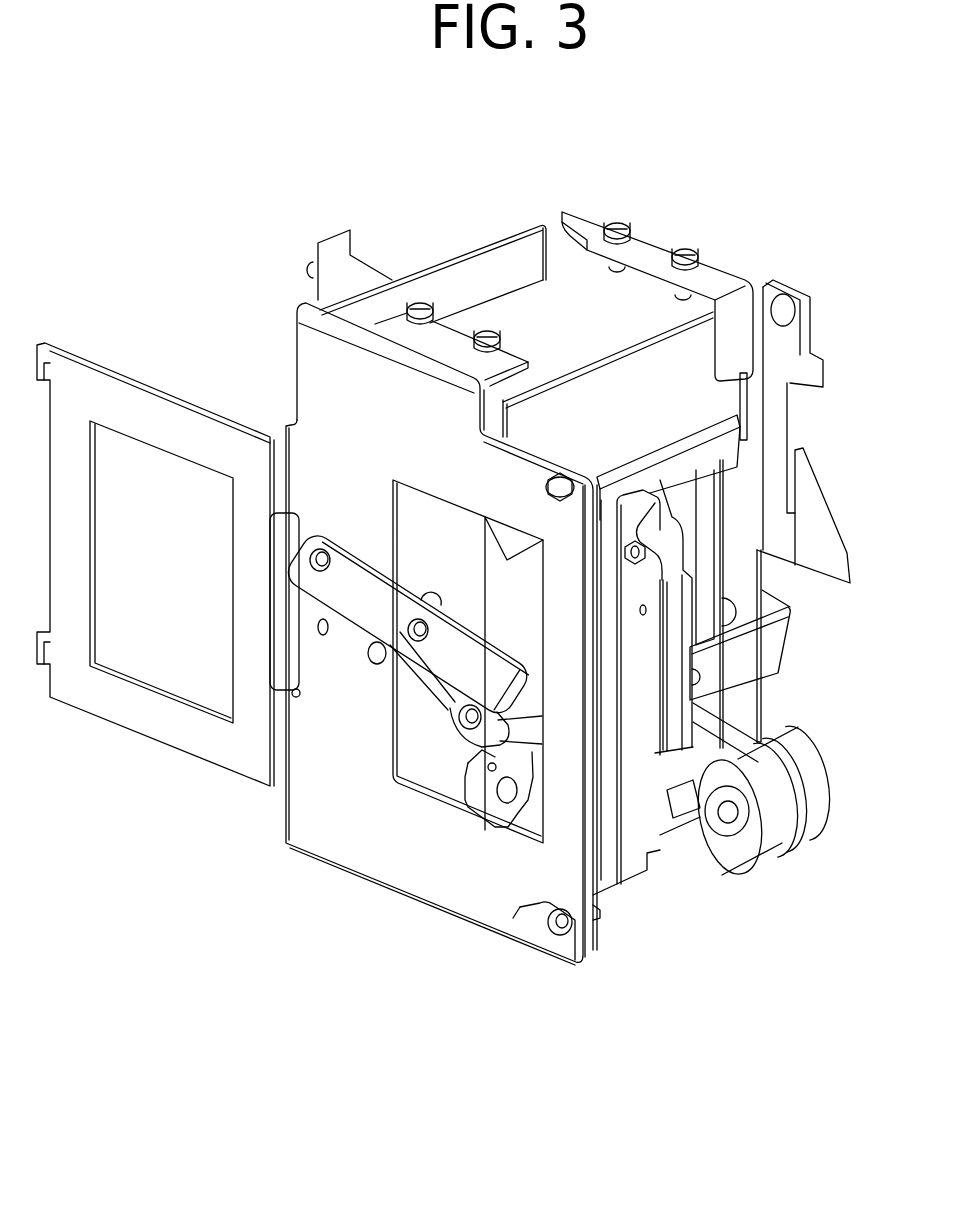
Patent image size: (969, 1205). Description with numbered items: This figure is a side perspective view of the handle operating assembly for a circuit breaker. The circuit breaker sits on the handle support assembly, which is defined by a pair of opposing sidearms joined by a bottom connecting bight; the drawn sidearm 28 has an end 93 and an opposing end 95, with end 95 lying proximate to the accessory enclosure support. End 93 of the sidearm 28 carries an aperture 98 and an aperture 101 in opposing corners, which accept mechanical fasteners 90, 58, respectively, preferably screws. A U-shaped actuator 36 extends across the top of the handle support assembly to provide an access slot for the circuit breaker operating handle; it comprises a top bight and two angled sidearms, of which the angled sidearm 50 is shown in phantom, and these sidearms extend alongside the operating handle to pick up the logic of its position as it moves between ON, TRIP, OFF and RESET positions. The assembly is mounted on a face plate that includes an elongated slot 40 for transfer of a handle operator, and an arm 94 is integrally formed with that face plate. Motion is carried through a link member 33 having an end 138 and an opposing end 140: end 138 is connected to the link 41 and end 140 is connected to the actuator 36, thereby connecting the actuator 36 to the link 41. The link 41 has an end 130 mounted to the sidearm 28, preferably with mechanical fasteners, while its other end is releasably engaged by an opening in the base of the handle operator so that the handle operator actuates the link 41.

The sidearm 28 is at (447, 890).
The link member 33 is at (465, 723).
The U-shaped actuator 36 is at (522, 740).
The elongated slot 40 is at (688, 506).
The link 41 is at (373, 607).
The angled sidearm 50 is at (485, 750).
The mechanical fastener 58 is at (590, 478).
The mechanical fastener 90 is at (570, 930).
The end 93 is at (580, 960).
The arm 94 is at (597, 917).
The opposing end 95 is at (303, 355).
The aperture 98 is at (527, 913).
The aperture 101 is at (562, 472).
The end 130 is at (316, 570).
The end 138 is at (410, 622).
The opposing end 140 is at (468, 733).